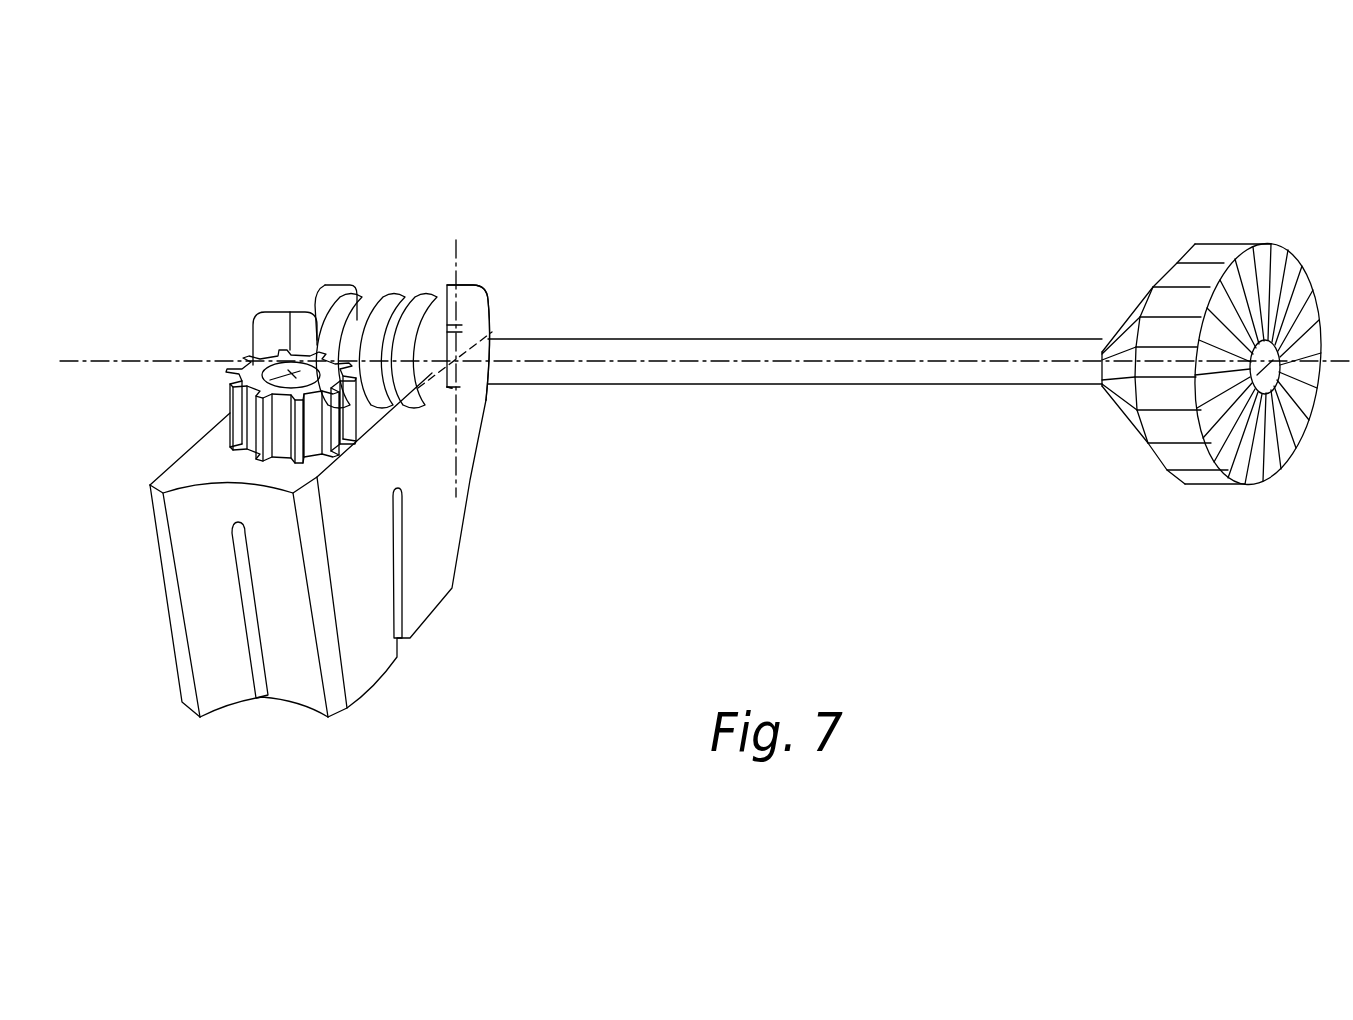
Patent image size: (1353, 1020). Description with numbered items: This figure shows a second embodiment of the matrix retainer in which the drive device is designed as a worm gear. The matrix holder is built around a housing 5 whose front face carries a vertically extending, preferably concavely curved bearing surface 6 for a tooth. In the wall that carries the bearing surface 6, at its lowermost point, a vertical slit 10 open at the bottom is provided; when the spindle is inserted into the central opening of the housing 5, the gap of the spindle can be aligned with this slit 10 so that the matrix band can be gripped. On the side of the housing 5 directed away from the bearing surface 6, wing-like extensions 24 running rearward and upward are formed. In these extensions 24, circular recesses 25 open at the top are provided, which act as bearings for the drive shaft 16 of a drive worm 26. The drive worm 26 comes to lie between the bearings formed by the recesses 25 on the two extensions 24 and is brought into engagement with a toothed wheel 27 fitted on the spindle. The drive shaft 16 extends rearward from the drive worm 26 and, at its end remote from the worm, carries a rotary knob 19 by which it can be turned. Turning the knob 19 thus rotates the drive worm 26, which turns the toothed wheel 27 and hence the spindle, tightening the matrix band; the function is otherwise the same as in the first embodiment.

The housing 5 is at (150, 520).
The bearing surface 6 is at (215, 648).
The vertical slit 10 is at (260, 680).
The drive shaft 16 is at (779, 348).
The rotary knob 19 is at (1208, 253).
The wing-like extensions 24 is at (330, 295).
The circular recesses 25 is at (457, 385).
The drive worm 26 is at (380, 307).
The toothed wheel 27 is at (250, 415).